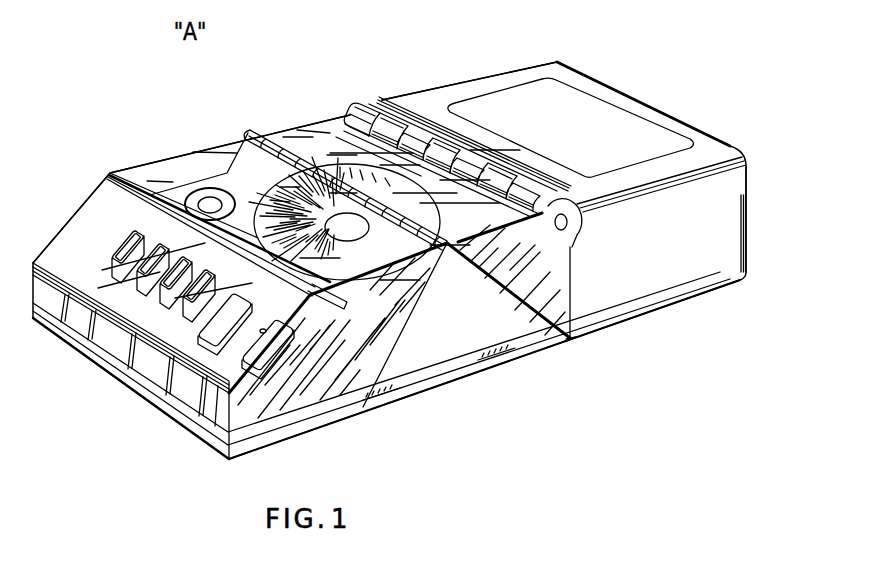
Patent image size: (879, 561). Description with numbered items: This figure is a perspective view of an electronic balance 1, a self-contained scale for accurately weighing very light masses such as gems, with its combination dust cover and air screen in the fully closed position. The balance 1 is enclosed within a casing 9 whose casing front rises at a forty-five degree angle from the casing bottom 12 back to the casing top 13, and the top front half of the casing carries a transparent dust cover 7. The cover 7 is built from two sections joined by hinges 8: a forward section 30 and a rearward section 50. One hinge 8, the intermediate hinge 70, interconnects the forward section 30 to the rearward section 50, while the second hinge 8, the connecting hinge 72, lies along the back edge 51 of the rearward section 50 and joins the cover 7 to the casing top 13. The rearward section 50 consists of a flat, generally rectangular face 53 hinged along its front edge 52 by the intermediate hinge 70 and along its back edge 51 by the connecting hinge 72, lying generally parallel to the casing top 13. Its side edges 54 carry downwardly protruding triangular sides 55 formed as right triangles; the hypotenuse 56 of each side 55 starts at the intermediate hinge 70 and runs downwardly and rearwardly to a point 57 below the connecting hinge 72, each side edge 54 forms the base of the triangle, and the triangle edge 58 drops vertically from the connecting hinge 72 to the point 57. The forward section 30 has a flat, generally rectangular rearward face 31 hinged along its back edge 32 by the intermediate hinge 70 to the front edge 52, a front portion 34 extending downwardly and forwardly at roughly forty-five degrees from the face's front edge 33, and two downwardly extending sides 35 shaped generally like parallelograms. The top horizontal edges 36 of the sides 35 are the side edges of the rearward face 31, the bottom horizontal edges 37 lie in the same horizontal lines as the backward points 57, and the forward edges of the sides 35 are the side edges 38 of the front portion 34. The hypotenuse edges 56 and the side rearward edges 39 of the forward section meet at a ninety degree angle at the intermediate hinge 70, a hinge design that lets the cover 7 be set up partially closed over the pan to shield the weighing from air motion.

The electronic balance 1 is at (720, 119).
The transparent dust cover 7 is at (96, 111).
The hinges 8 is at (263, 132).
The casing 9 is at (735, 189).
The casing bottom 12 is at (190, 437).
The casing top 13 is at (527, 162).
The forward section 30 is at (153, 147).
The rearward face 31 is at (192, 157).
The back edge 32 is at (247, 133).
The front edge 33 is at (108, 172).
The front portion 34 is at (80, 217).
The sides 35 is at (334, 398).
The top horizontal edges 36 is at (357, 277).
The bottom horizontal edges 37 is at (290, 431).
The side edges 38 is at (285, 374).
The side rearward edges 39 is at (408, 320).
The rearward section 50 is at (337, 84).
The back edge 51 is at (353, 105).
The front edge 52 is at (275, 130).
The face 53 is at (322, 128).
The side edges 54 is at (490, 228).
The triangular sides 55 is at (563, 293).
The hypotenuse 56 is at (530, 307).
The point 57 is at (571, 334).
The triangle edge 58 is at (572, 252).
The intermediate hinge 70 is at (258, 130).
The connecting hinge 72 is at (386, 104).